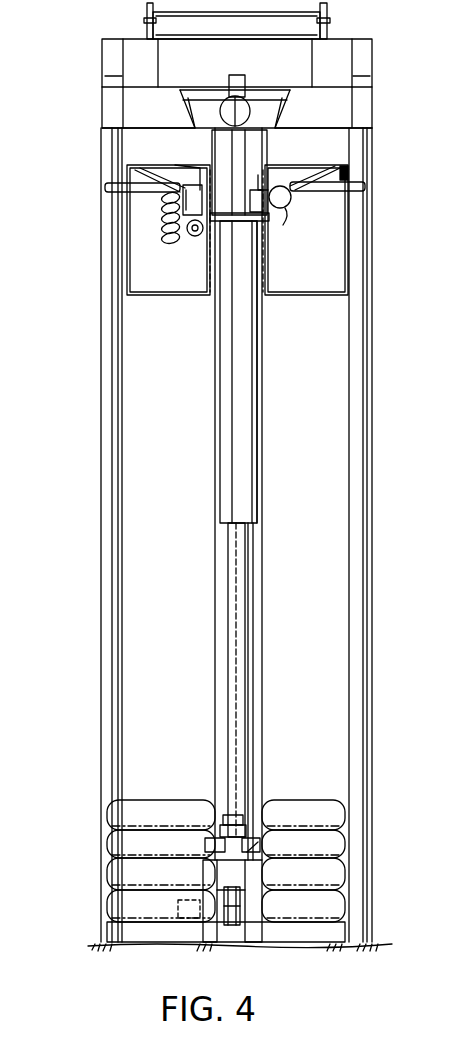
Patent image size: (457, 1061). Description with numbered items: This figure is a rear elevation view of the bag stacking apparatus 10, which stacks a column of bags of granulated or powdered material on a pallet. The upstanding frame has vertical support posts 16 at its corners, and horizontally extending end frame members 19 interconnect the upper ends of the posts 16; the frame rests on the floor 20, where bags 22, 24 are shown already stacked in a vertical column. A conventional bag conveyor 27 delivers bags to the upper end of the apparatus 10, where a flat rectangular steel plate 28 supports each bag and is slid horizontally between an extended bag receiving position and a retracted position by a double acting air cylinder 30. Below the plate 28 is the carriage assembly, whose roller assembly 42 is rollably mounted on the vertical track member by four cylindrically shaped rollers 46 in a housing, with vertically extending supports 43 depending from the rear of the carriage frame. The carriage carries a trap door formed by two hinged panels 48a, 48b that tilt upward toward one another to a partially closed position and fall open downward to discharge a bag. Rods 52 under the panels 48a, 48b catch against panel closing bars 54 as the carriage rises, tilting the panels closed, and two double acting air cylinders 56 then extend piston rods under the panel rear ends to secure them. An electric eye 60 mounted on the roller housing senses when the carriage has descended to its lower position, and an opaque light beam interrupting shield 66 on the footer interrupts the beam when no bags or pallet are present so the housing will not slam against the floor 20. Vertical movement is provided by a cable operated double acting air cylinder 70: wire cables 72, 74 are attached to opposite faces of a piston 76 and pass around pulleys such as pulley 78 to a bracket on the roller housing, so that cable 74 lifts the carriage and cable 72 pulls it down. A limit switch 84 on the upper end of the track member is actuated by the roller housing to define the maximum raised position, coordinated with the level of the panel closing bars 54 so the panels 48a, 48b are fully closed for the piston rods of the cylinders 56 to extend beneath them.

The apparatus 10 is at (88, 378).
The vertical support posts 16 is at (108, 381).
The end frame members 19 is at (330, 60).
The floor 20 is at (95, 943).
The bag of granulated material 22 is at (316, 920).
The bag of granulated material 24 is at (166, 855).
The bag conveyor 27 is at (147, 9).
The steel plate 28 is at (270, 92).
The double acting air cylinder 30 is at (232, 105).
The roller assembly 42 is at (265, 274).
The vertically extending supports 43 is at (127, 272).
The cylindrically shaped rollers 46 is at (207, 290).
The trap door panel 48a is at (183, 192).
The trap door panel 48b is at (283, 186).
The rods 52 is at (108, 192).
The panel closing bars 54 is at (135, 173).
The double acting air cylinders 56 is at (285, 210).
The electric eye 60 is at (188, 248).
The light beam interrupting shield 66 is at (165, 928).
The cable operated double acting air cylinder 70 is at (262, 420).
The wire cable 72 is at (262, 836).
The wire cable 74 is at (240, 682).
The piston 76 is at (248, 812).
The pulley 78 is at (250, 912).
The limit switch 84 is at (200, 168).